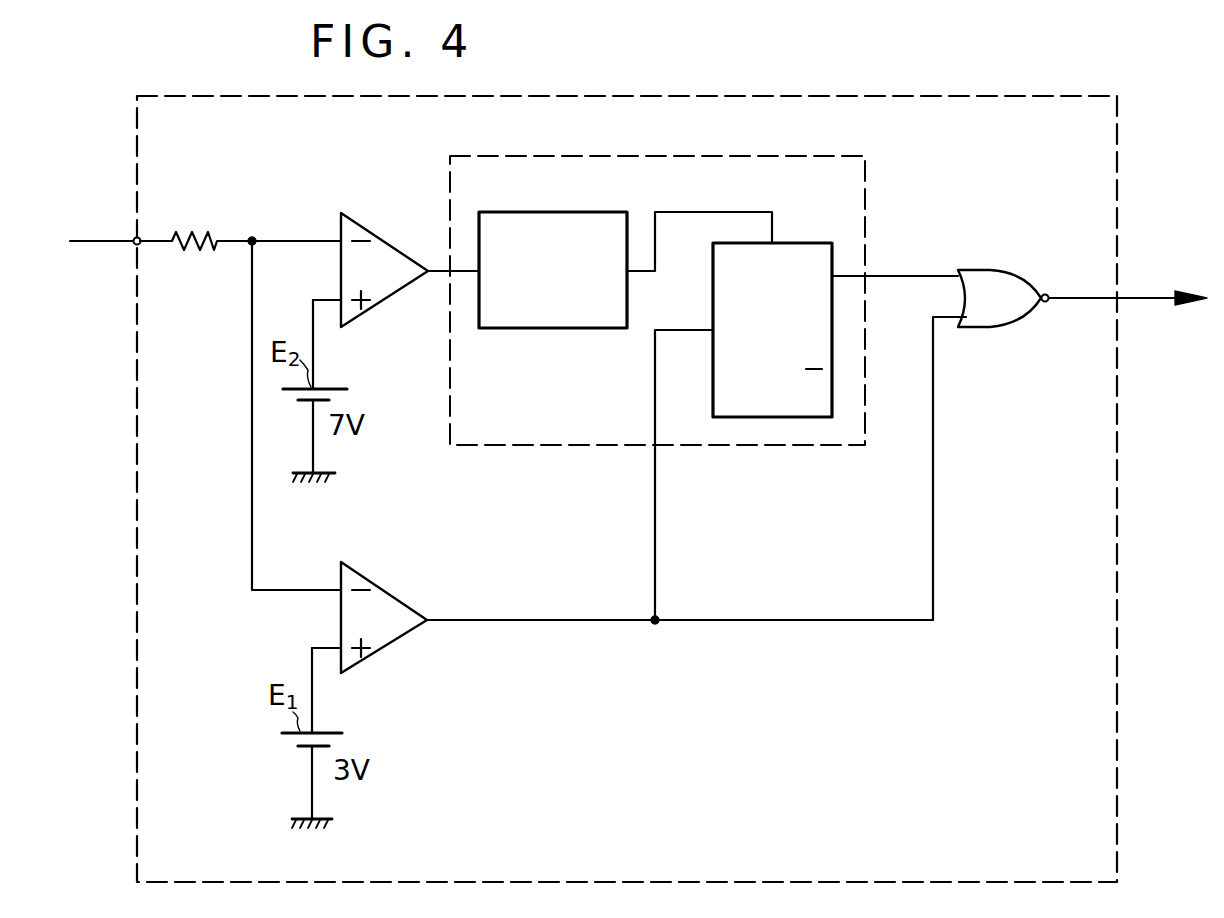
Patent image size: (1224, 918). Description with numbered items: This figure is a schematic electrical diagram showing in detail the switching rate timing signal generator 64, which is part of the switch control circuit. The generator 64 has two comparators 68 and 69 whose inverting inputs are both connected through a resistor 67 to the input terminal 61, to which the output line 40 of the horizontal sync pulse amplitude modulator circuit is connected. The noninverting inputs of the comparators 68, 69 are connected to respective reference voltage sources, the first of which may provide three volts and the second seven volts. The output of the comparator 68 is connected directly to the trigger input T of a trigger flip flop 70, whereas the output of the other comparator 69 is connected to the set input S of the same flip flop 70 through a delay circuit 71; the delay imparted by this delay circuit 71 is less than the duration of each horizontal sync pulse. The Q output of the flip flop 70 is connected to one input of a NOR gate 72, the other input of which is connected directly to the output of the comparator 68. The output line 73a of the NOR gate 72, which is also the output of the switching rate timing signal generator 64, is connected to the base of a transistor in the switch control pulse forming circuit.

The output line 40 is at (100, 240).
The input terminal 61 is at (134, 245).
The resistor 67 is at (205, 240).
The comparator 69 is at (390, 243).
The comparator 68 is at (390, 590).
The trigger flip flop 70 is at (805, 243).
The delay circuit 71 is at (555, 330).
The NOR gate 72 is at (998, 328).
The output line 73a is at (1152, 300).
The switching rate timing signal generator 64 is at (1118, 203).